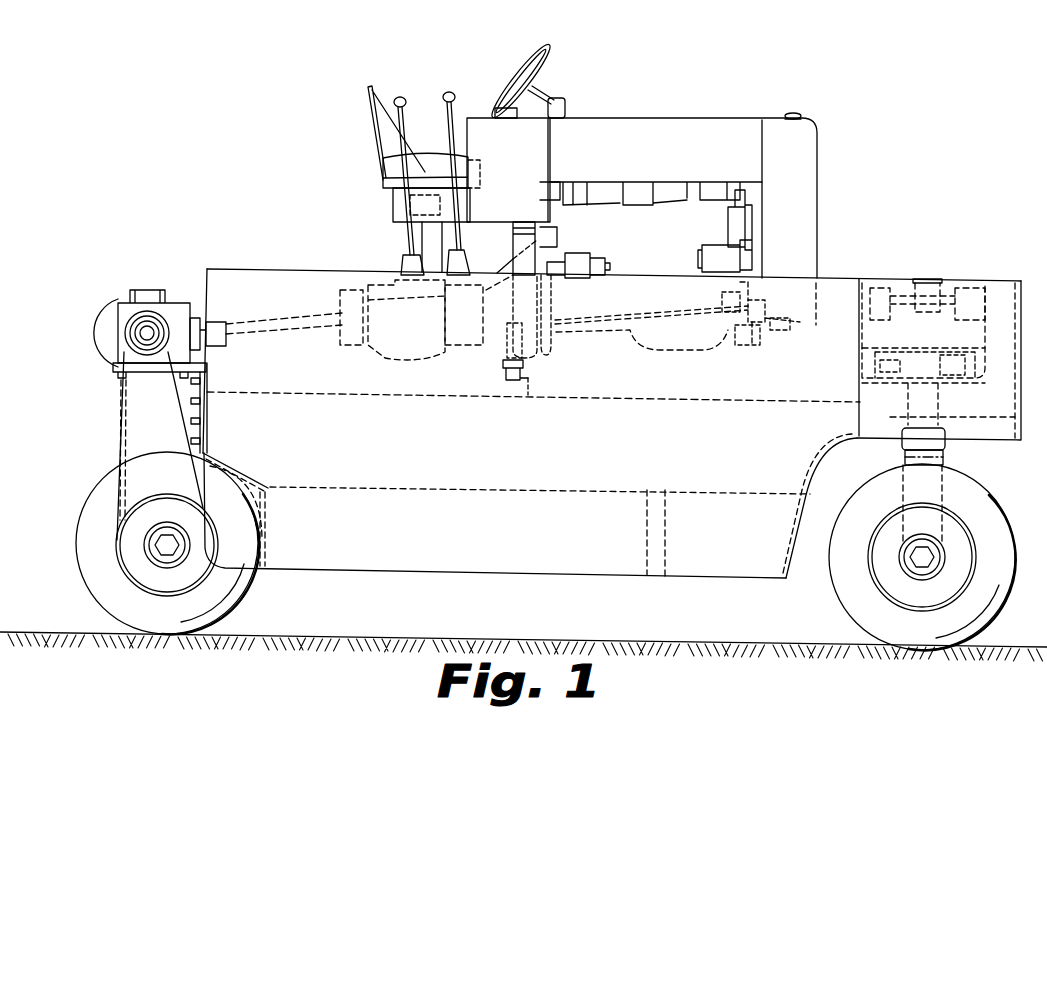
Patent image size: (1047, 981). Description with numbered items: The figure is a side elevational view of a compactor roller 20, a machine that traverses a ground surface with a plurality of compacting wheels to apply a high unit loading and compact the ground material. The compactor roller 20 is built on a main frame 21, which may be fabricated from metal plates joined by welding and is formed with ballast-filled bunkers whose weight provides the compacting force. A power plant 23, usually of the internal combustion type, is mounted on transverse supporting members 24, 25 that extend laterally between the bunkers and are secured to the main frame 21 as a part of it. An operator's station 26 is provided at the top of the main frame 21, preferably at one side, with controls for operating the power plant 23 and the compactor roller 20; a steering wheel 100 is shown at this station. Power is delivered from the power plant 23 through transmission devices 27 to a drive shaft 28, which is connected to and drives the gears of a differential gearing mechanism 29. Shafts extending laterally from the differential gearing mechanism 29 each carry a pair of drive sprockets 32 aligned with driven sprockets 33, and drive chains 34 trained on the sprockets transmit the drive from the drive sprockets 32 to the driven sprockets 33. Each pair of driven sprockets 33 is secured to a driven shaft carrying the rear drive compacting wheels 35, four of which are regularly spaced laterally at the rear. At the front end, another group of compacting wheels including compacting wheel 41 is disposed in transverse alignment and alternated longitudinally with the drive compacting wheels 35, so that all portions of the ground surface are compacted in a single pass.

The compactor roller 20 is at (297, 264).
The main frame 21 is at (842, 276).
The power plant 23 is at (660, 230).
The transverse supporting member 24 is at (530, 381).
The transverse supporting member 25 is at (782, 352).
The operator's station 26 is at (428, 140).
The transmission devices 27 is at (405, 316).
The drive shaft 28 is at (258, 325).
The differential gearing mechanism 29 is at (104, 316).
The drive sprockets 32 is at (146, 318).
The driven sprockets 33 is at (125, 575).
The drive chains 34 is at (125, 405).
The compacting wheels 35 is at (95, 503).
The compacting wheel 41 is at (848, 602).
The steering wheel 100 is at (551, 45).